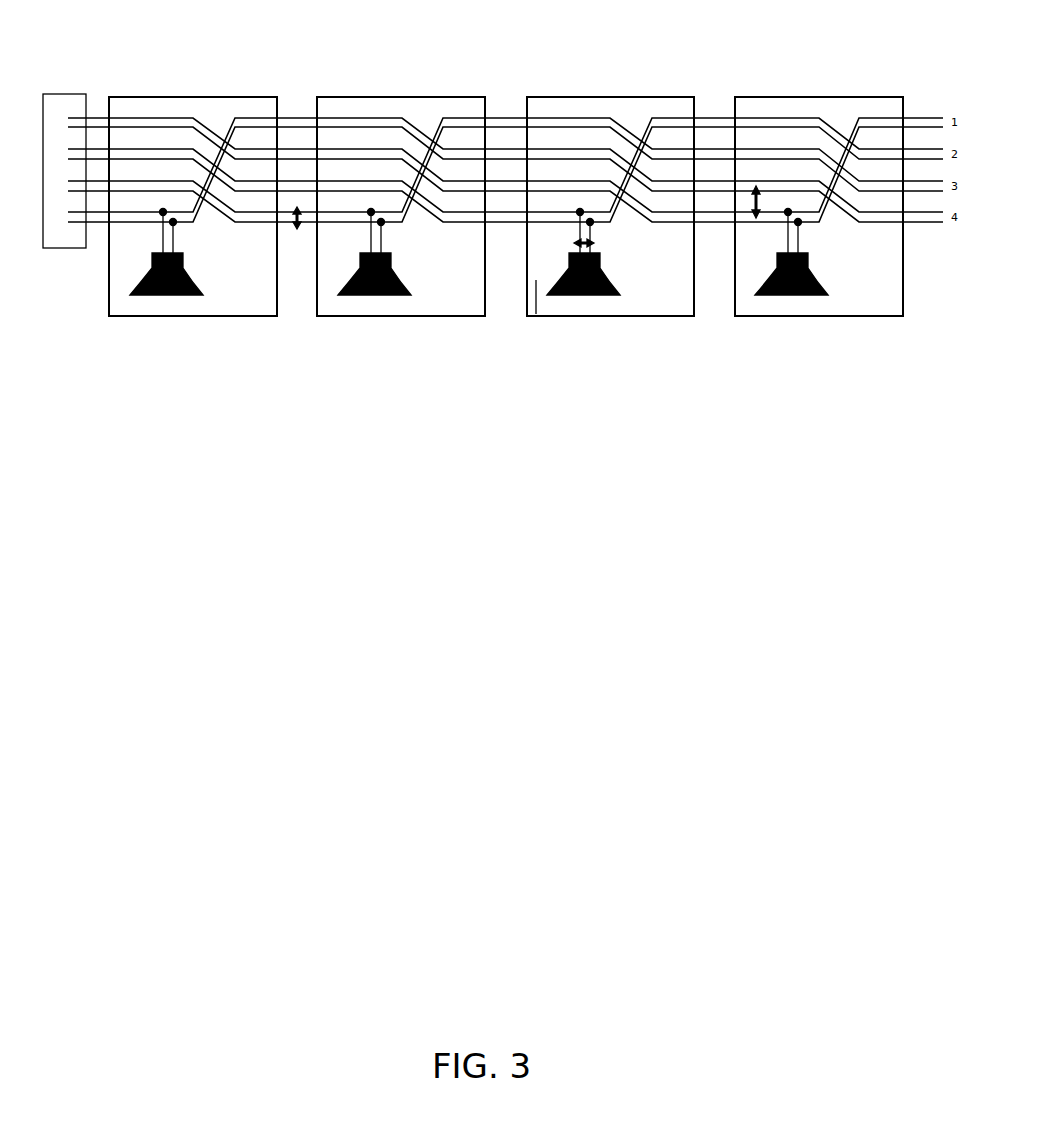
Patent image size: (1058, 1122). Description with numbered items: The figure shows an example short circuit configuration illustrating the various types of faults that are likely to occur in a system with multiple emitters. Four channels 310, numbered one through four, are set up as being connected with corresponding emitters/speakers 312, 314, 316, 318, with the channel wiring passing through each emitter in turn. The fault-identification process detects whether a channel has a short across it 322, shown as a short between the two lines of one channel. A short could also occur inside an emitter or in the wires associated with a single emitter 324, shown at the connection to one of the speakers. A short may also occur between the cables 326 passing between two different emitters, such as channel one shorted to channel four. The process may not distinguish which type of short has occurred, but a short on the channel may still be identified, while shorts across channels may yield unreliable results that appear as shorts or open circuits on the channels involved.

The channels 310 is at (66, 82).
The emitter/speaker 312 is at (226, 84).
The emitter/speaker 314 is at (433, 84).
The emitter/speaker 316 is at (647, 84).
The emitter/speaker 318 is at (853, 84).
The short across a channel 322 is at (297, 247).
The short in wires of a single emitter 324 is at (558, 244).
The short between cables of different emitters 326 is at (736, 210).